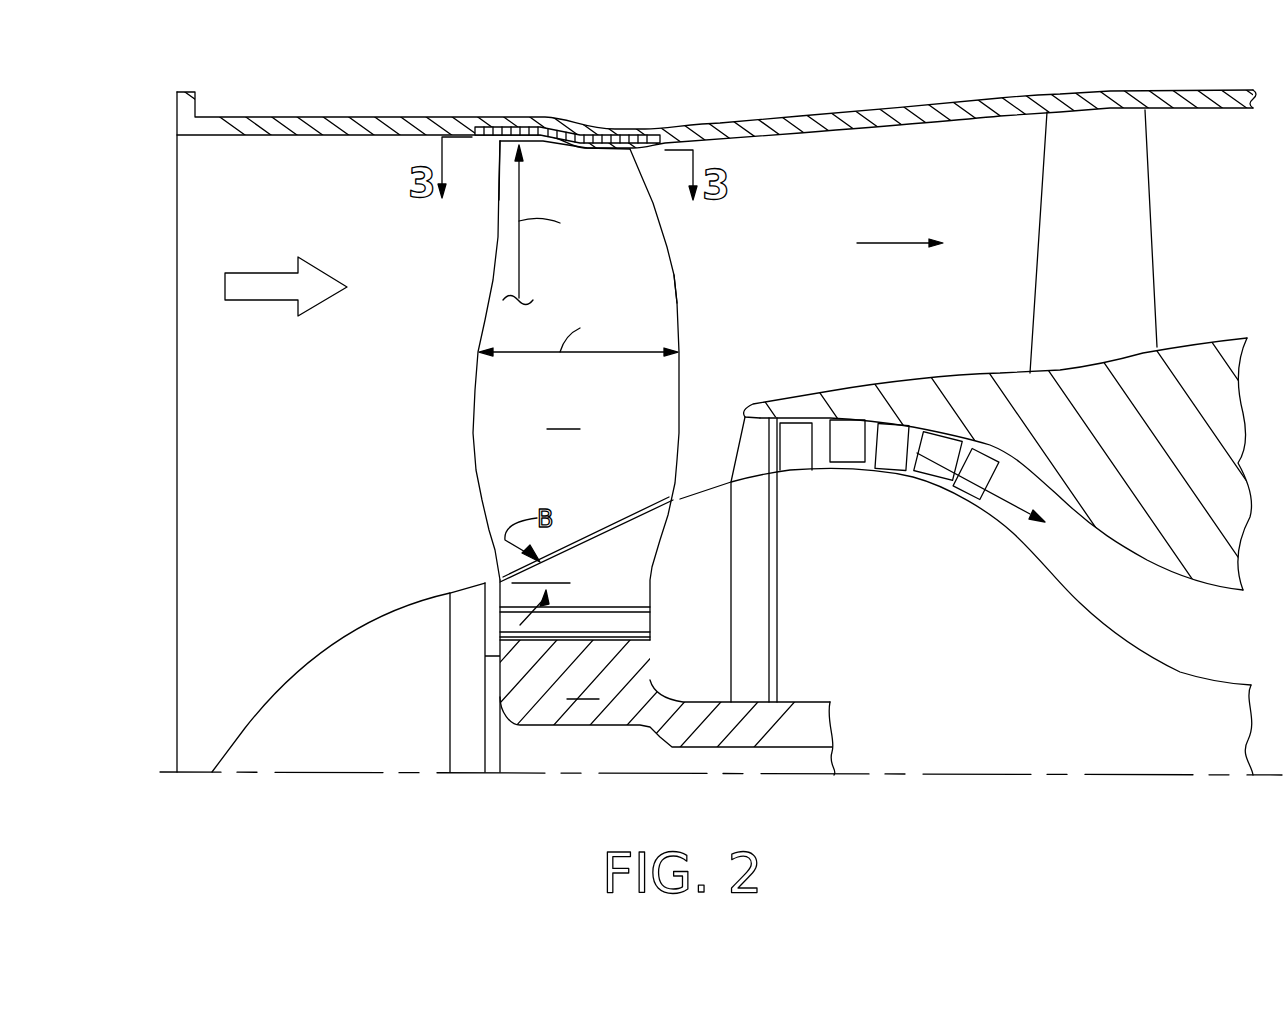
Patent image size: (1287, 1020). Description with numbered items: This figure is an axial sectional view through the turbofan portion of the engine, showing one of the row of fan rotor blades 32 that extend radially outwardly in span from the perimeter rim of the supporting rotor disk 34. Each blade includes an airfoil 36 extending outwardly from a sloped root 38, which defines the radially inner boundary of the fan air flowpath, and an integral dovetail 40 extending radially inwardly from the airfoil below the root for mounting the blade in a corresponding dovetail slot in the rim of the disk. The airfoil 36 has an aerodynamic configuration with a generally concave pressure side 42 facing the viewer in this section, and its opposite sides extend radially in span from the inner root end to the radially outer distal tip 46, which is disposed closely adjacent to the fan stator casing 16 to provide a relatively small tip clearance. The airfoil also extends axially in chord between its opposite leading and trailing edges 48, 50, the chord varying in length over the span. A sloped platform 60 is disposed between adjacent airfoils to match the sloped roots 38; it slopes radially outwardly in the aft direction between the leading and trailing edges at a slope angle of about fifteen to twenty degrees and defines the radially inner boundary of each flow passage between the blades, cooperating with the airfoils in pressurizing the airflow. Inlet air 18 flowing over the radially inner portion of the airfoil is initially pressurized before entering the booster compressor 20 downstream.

The fan stator casing 16 is at (342, 117).
The inlet airflow 18 is at (270, 303).
The booster compressor 20 is at (895, 403).
The fan rotor blades 32 is at (465, 436).
The rotor disk 34 is at (564, 697).
The airfoil 36 is at (667, 247).
The sloped root 38 is at (642, 513).
The dovetail 40 is at (640, 612).
The pressure side 42 is at (553, 390).
The distal tip 46 is at (543, 127).
The leading edge 48 is at (500, 233).
The trailing edge 50 is at (677, 300).
The sloped platform 60 is at (552, 560).